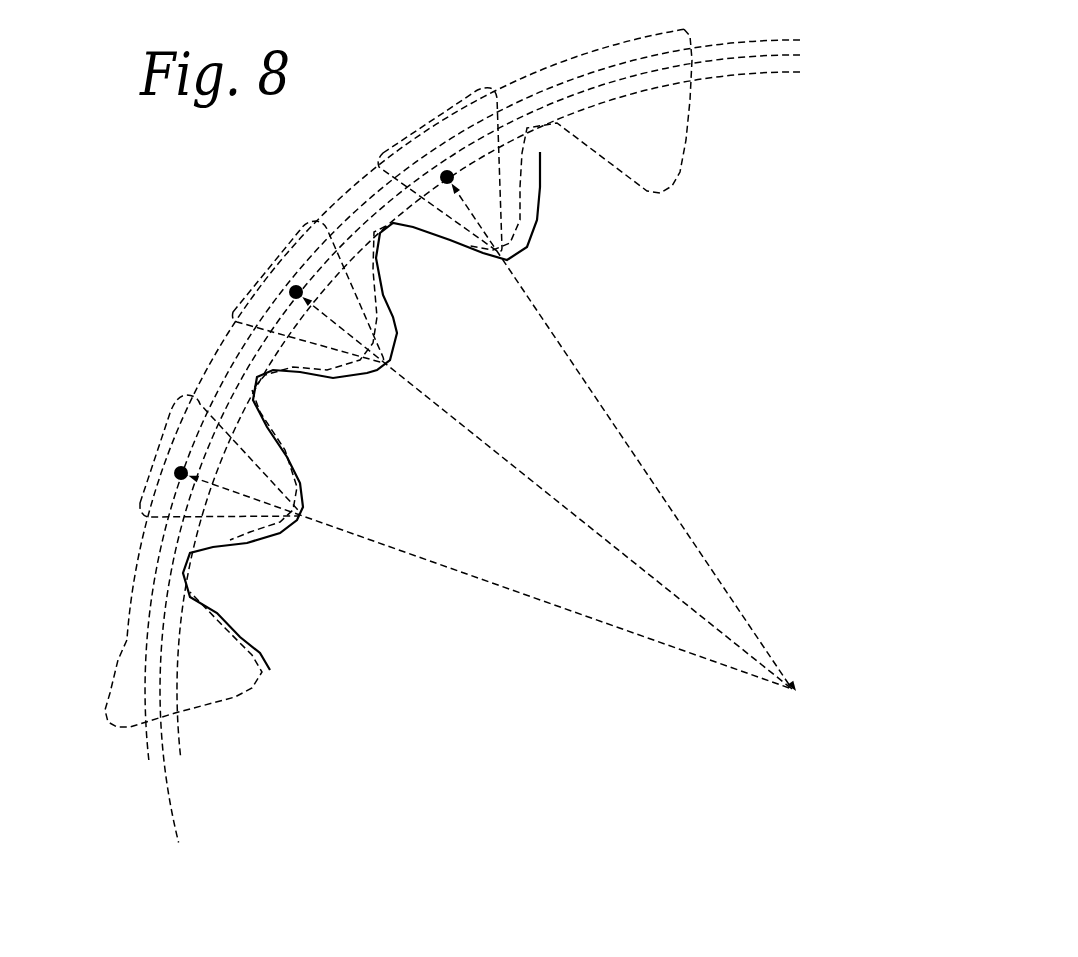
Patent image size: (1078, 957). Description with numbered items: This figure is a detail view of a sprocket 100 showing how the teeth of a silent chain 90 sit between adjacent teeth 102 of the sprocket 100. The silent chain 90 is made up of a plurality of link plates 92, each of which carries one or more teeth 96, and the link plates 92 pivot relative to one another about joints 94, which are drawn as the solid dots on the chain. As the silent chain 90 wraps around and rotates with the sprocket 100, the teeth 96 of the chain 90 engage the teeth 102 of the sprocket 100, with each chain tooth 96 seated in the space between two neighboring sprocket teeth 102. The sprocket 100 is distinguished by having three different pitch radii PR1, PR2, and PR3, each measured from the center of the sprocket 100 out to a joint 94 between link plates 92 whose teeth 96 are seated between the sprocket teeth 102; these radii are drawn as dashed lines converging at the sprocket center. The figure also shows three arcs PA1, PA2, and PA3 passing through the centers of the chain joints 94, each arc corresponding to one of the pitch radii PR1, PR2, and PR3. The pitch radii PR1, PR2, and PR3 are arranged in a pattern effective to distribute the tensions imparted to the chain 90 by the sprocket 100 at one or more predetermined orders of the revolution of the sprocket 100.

The silent chain 90 is at (133, 575).
The link plate 92 is at (170, 412).
The joint 94 is at (176, 472).
The tooth 96 is at (234, 699).
The sprocket 100 is at (688, 362).
The tooth 102 is at (677, 185).
The pitch radius PR1 is at (600, 400).
The pitch radius PR2 is at (470, 463).
The pitch radius PR3 is at (483, 597).
The arc PA1 is at (487, 428).
The arc PA2 is at (480, 464).
The arc PA3 is at (460, 416).